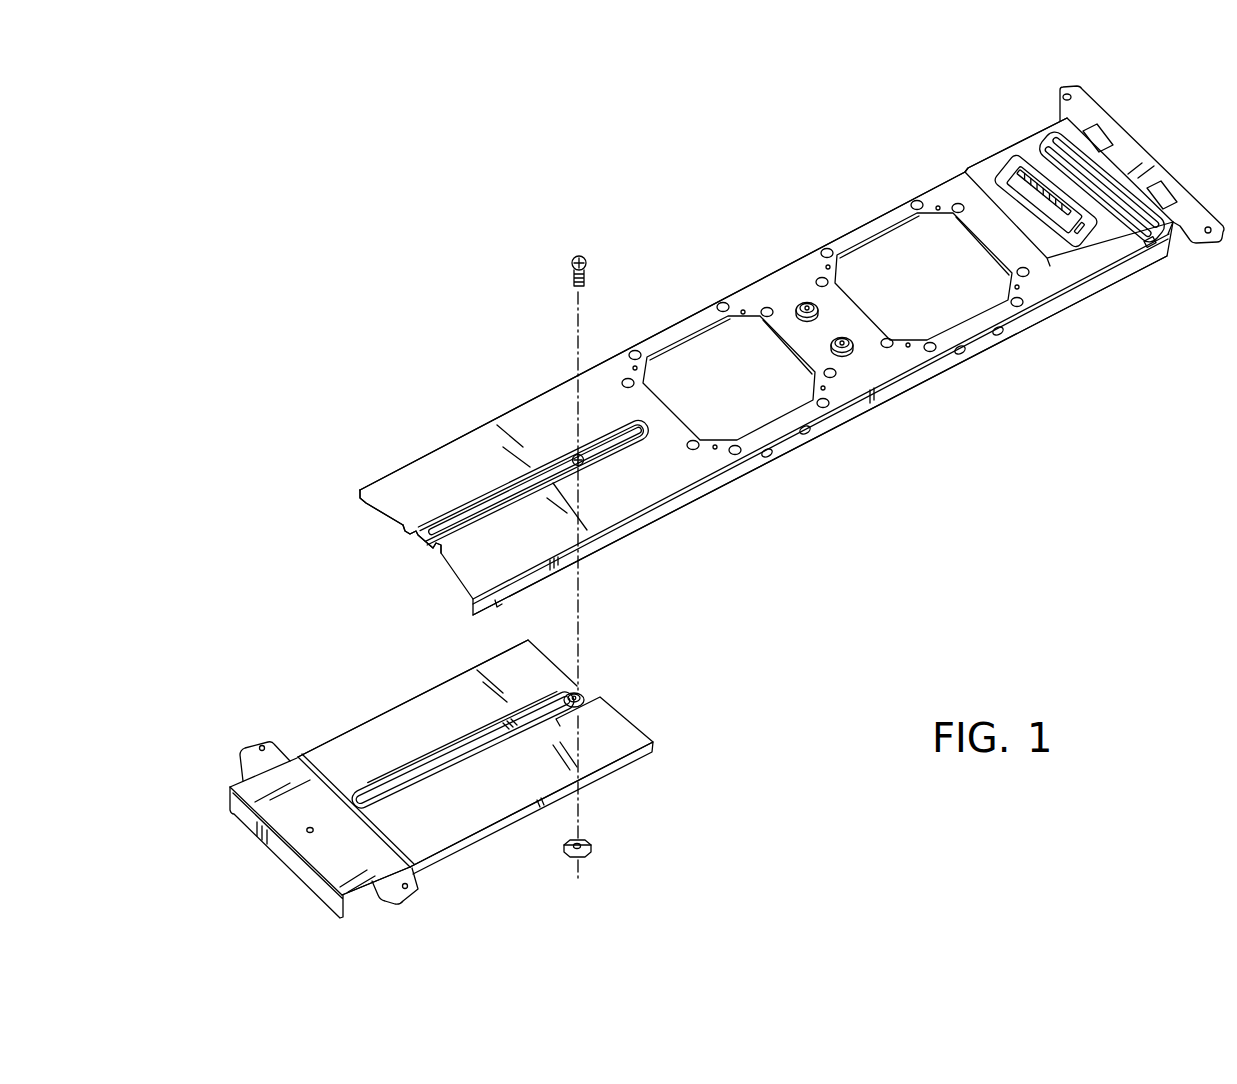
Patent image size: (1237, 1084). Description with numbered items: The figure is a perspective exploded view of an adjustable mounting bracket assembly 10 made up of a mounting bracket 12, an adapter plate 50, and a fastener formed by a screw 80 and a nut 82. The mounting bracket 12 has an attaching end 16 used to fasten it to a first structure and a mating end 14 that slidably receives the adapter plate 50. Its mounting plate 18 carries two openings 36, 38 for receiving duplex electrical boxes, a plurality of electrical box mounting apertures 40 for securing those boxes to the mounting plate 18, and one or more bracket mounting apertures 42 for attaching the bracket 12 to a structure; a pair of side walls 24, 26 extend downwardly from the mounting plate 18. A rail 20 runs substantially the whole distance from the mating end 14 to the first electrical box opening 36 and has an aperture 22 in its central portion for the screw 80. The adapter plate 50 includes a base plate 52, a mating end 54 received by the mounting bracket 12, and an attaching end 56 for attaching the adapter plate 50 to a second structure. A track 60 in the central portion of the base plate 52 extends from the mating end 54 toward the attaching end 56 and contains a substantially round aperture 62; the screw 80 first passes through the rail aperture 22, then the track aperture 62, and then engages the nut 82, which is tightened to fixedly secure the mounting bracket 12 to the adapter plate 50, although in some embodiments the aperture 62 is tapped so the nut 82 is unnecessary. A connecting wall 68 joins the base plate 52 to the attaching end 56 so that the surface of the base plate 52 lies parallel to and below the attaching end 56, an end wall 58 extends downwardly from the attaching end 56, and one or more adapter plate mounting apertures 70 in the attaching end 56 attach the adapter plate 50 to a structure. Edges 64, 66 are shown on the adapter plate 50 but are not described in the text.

The adjustable mounting bracket assembly 10 is at (455, 265).
The mounting bracket 12 is at (1030, 356).
The mating end 14 is at (378, 520).
The attaching end 16 is at (1128, 150).
The mounting plate 18 is at (780, 290).
The rail 20 is at (432, 546).
The aperture 22 is at (492, 505).
The side wall 24 is at (348, 487).
The side wall 26 is at (730, 470).
The first electrical box opening 36 is at (716, 389).
The second electrical box opening 38 is at (908, 285).
The electrical box mounting apertures 40 is at (921, 185).
The bracket mounting apertures 42 is at (1060, 92).
The adapter plate 50 is at (670, 782).
The base plate 52 is at (412, 718).
The mating end 54 is at (640, 717).
The attaching end 56 is at (268, 772).
The end wall 58 is at (268, 852).
The track 60 is at (584, 690).
The aperture 62 is at (570, 705).
The edge of slide plate 64 is at (343, 732).
The edge of base plate 66 is at (480, 837).
The connecting wall 68 is at (412, 870).
The adapter plate mounting apertures 70 is at (260, 746).
The screw 80 is at (584, 257).
The nut 82 is at (591, 850).